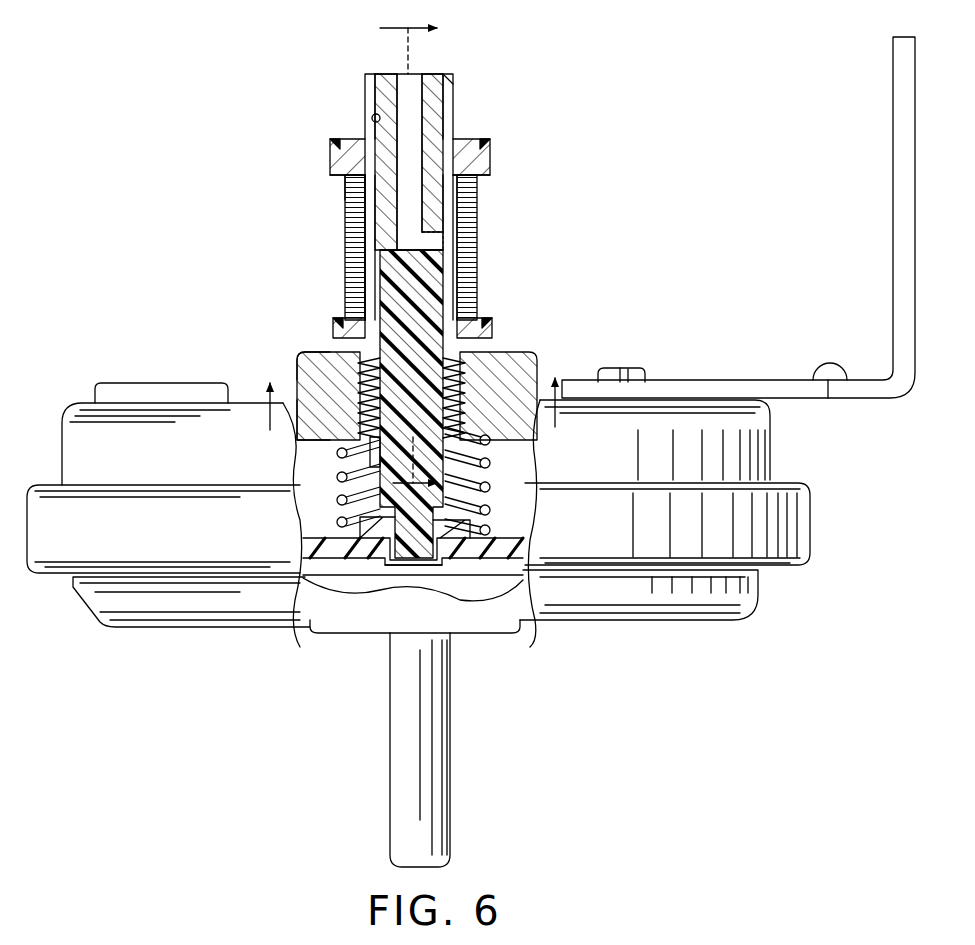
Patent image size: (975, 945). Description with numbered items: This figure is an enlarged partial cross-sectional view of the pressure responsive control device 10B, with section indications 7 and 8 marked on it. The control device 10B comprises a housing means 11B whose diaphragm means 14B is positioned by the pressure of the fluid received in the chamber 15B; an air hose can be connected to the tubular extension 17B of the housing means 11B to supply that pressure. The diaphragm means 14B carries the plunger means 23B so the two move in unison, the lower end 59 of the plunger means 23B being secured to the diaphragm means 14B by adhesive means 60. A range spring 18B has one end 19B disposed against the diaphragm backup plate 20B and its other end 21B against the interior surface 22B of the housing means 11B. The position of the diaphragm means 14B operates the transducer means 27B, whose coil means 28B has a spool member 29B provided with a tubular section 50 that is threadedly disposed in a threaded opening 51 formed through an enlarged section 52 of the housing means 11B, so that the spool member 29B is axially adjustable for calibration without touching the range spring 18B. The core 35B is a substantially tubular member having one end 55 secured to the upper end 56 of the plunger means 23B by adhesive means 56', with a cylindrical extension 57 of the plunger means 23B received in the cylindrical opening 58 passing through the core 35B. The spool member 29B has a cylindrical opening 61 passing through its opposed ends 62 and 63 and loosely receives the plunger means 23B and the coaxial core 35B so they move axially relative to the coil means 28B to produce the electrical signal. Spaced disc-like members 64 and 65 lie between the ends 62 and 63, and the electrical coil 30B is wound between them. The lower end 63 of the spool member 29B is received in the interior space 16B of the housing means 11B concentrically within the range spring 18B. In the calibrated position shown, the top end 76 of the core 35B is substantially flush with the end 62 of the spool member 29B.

The pressure responsive control device 10B is at (157, 257).
The housing means 11B is at (160, 615).
The diaphragm means 14B is at (320, 570).
The chamber 15B is at (505, 575).
The interior space 16B is at (315, 445).
The tubular extension 17B is at (447, 788).
The range spring 18B is at (337, 501).
The end of range spring 19B is at (490, 531).
The diaphragm backup plate 20B is at (337, 523).
The other end of range spring 21B is at (490, 465).
The interior surface 22B is at (490, 445).
The plunger means 23B is at (432, 343).
The transducer means 27B is at (498, 222).
The coil means 28B is at (342, 232).
The spool member 29B is at (330, 148).
The electrical coil 30B is at (480, 297).
The core 35B is at (440, 125).
The tubular section 50 is at (355, 360).
The threaded opening 51 is at (300, 378).
The enlarged section 52 is at (310, 370).
The end of core 55 is at (437, 240).
The upper end of plunger 56 is at (459, 269).
The adhesive means 56' is at (314, 285).
The cylindrical extension 57 is at (420, 238).
The cylindrical opening 58 is at (345, 206).
The lower end of plunger 59 is at (440, 525).
The adhesive means 60 is at (460, 560).
The cylindrical opening 61 is at (372, 112).
The end of spool member 62 is at (365, 78).
The lower end of spool member 63 is at (335, 467).
The disc-like member 64 is at (330, 172).
The disc-like member 65 is at (340, 318).
The top end of core member 76 is at (435, 74).
The section line 7 is at (415, 407).
The section line 8 is at (408, 257).